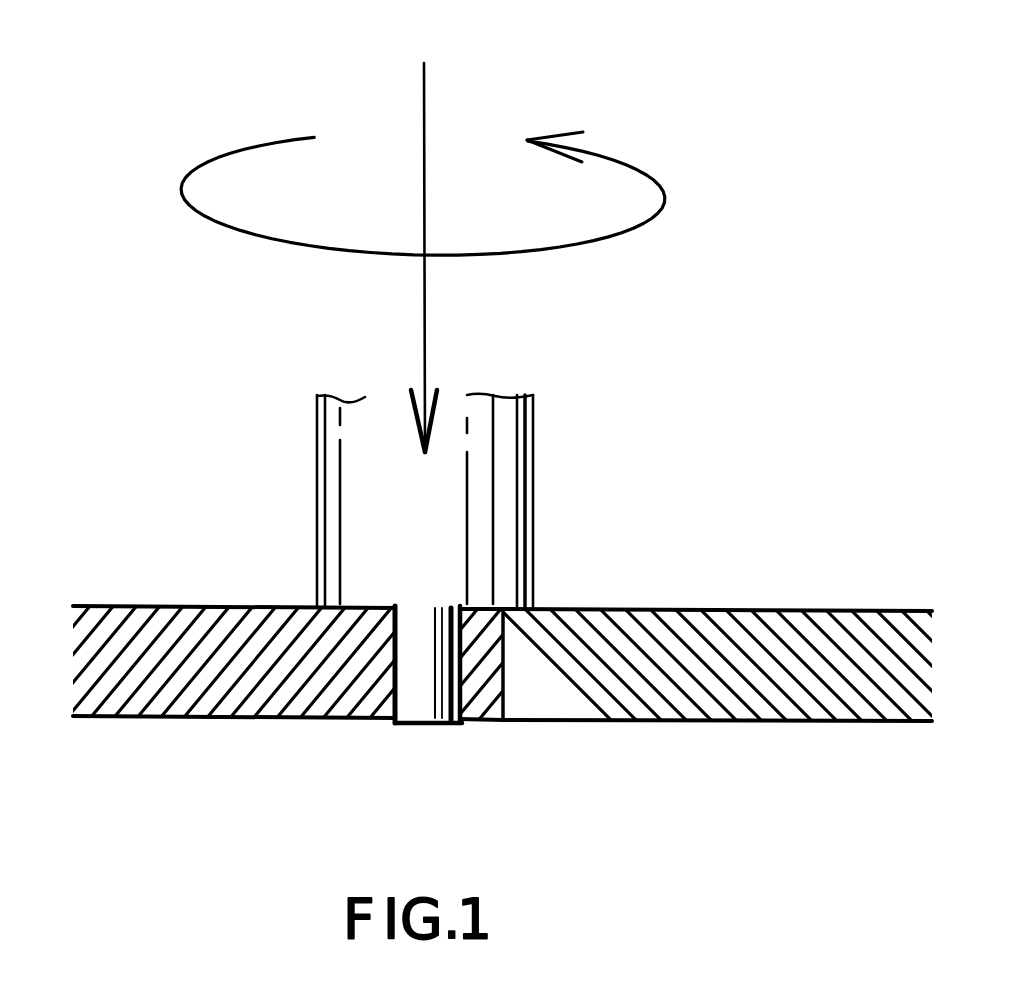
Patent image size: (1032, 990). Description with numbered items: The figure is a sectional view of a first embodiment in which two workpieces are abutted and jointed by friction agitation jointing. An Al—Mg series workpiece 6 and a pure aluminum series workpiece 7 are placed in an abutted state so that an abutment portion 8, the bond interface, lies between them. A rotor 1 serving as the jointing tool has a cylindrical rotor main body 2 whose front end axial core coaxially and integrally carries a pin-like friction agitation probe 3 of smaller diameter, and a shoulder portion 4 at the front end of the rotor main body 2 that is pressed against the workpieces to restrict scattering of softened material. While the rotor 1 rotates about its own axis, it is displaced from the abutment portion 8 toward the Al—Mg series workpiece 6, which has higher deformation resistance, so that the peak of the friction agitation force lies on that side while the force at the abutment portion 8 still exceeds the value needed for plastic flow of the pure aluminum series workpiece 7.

The rotor 1 is at (488, 501).
The cylindrical rotor main body 2 is at (508, 532).
The friction agitation probe 3 is at (414, 656).
The shoulder portion 4 is at (337, 633).
The Al—Mg series workpiece 6 is at (168, 627).
The pure aluminum series workpiece 7 is at (815, 625).
The abutment portion 8 is at (505, 670).